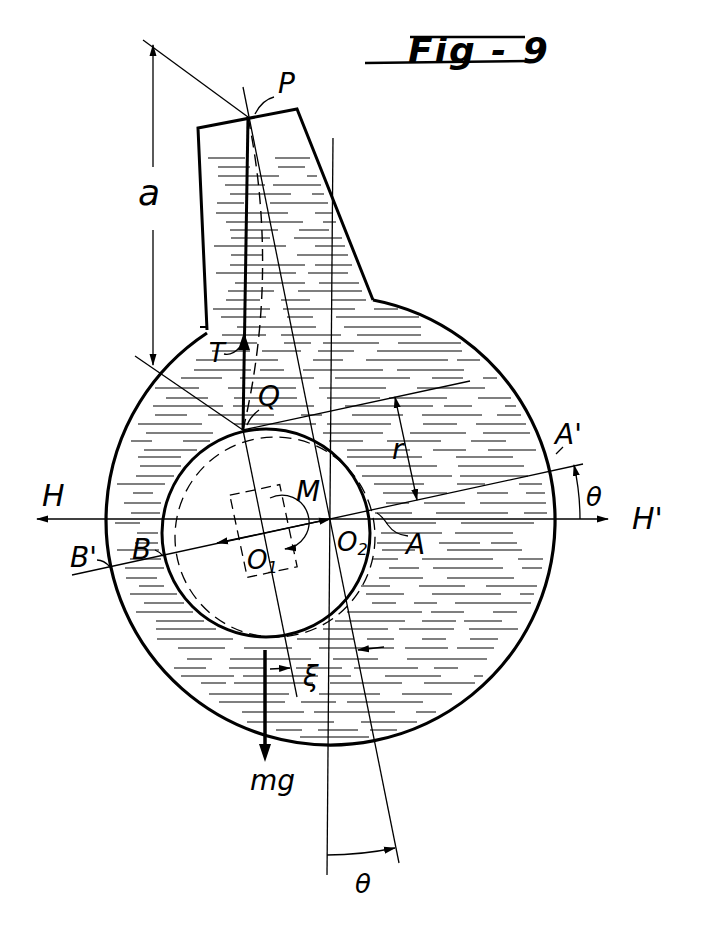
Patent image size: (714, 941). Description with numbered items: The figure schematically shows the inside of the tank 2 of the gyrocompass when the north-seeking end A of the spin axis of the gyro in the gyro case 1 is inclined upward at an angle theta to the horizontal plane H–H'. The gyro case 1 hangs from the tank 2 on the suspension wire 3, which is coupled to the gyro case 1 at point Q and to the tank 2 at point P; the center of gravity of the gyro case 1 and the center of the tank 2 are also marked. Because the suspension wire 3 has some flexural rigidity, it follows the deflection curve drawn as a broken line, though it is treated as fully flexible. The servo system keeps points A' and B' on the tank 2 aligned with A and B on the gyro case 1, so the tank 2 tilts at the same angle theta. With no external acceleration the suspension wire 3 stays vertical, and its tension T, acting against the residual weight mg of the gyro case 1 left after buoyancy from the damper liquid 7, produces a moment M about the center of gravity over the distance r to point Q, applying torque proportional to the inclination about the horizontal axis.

The gyro case 1 is at (192, 455).
The tank 2 is at (330, 427).
The suspension wire 3 is at (257, 167).
The damper liquid 7 is at (500, 648).